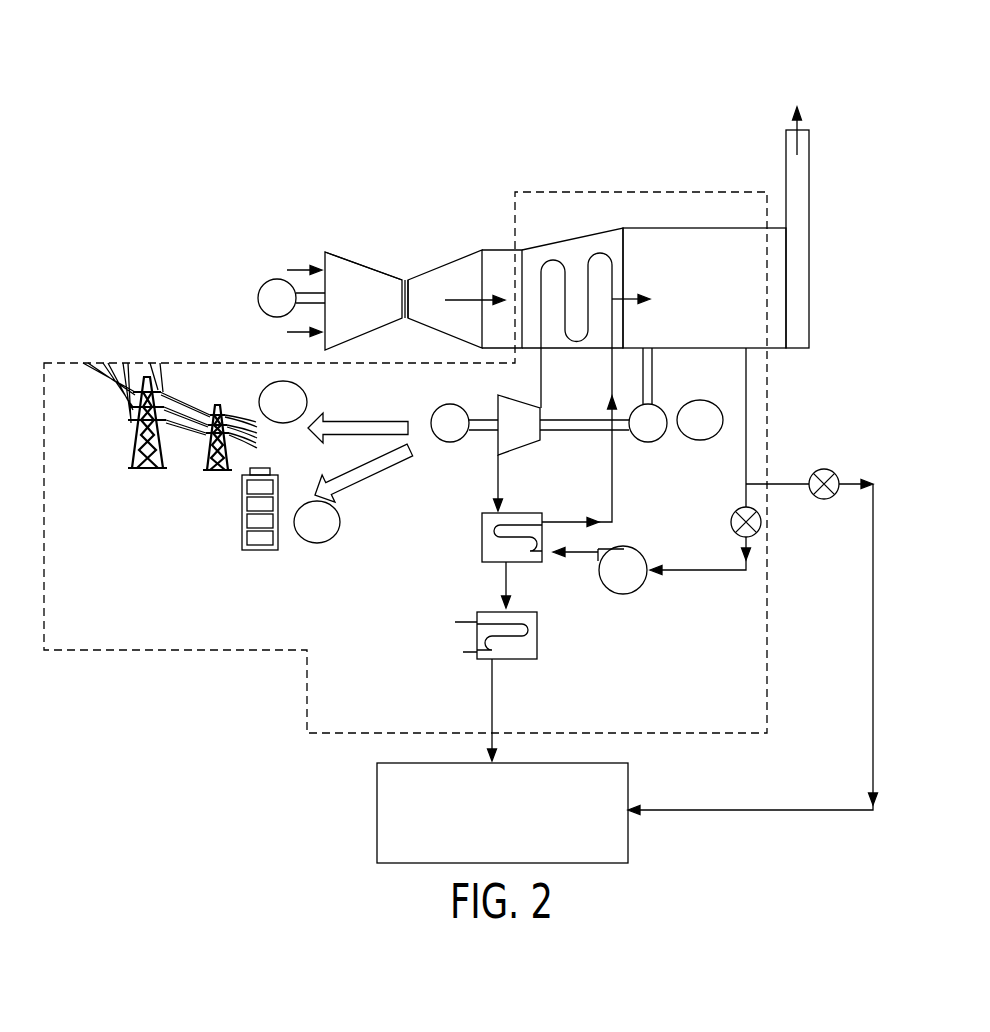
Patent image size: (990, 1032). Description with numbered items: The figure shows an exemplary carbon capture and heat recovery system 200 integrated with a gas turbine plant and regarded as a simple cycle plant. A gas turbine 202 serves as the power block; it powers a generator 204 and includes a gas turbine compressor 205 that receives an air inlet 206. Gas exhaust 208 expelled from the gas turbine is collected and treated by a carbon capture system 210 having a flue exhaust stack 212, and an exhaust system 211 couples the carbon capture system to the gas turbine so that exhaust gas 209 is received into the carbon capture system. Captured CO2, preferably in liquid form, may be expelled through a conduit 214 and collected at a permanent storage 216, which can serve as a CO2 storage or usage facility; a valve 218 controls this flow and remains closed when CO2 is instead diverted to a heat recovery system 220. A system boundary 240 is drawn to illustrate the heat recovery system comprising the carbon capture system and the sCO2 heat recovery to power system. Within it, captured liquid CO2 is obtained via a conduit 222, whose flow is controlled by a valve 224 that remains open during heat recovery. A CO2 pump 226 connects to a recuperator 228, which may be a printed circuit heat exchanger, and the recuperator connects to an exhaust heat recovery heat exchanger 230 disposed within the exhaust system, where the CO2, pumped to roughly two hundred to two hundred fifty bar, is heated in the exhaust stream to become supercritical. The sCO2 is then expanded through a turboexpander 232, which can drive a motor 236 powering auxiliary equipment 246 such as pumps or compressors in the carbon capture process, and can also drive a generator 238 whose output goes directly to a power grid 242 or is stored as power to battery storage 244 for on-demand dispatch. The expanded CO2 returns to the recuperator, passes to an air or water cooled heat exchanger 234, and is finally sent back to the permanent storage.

The carbon capture and heat recovery system 200 is at (236, 150).
The gas turbine 202 is at (371, 312).
The generator 204 is at (258, 302).
The gas turbine compressor 205 is at (330, 255).
The air inlet 206 is at (292, 268).
The gas exhaust 208 is at (472, 300).
The exhaust gas 209 is at (618, 297).
The carbon capture system 210 is at (710, 230).
The exhaust system 211 is at (535, 257).
The flue exhaust stack 212 is at (797, 190).
The conduit 214 is at (873, 683).
The permanent storage 216 is at (377, 815).
The valve 218 is at (824, 468).
The heat recovery system 220 is at (765, 730).
The conduit 222 is at (748, 400).
The valve 224 is at (762, 522).
The CO2 pump 226 is at (625, 594).
The recuperator 228 is at (535, 562).
The exhaust heat recovery heat exchanger 230 is at (577, 345).
The turboexpander 232 is at (530, 439).
The heat exchanger 234 is at (530, 659).
The motor 236 is at (648, 442).
The generator 238 is at (453, 443).
The system boundary 240 is at (702, 736).
The power grid 242 is at (345, 427).
The power to battery storage 244 is at (347, 470).
The auxiliary equipment 246 is at (700, 440).